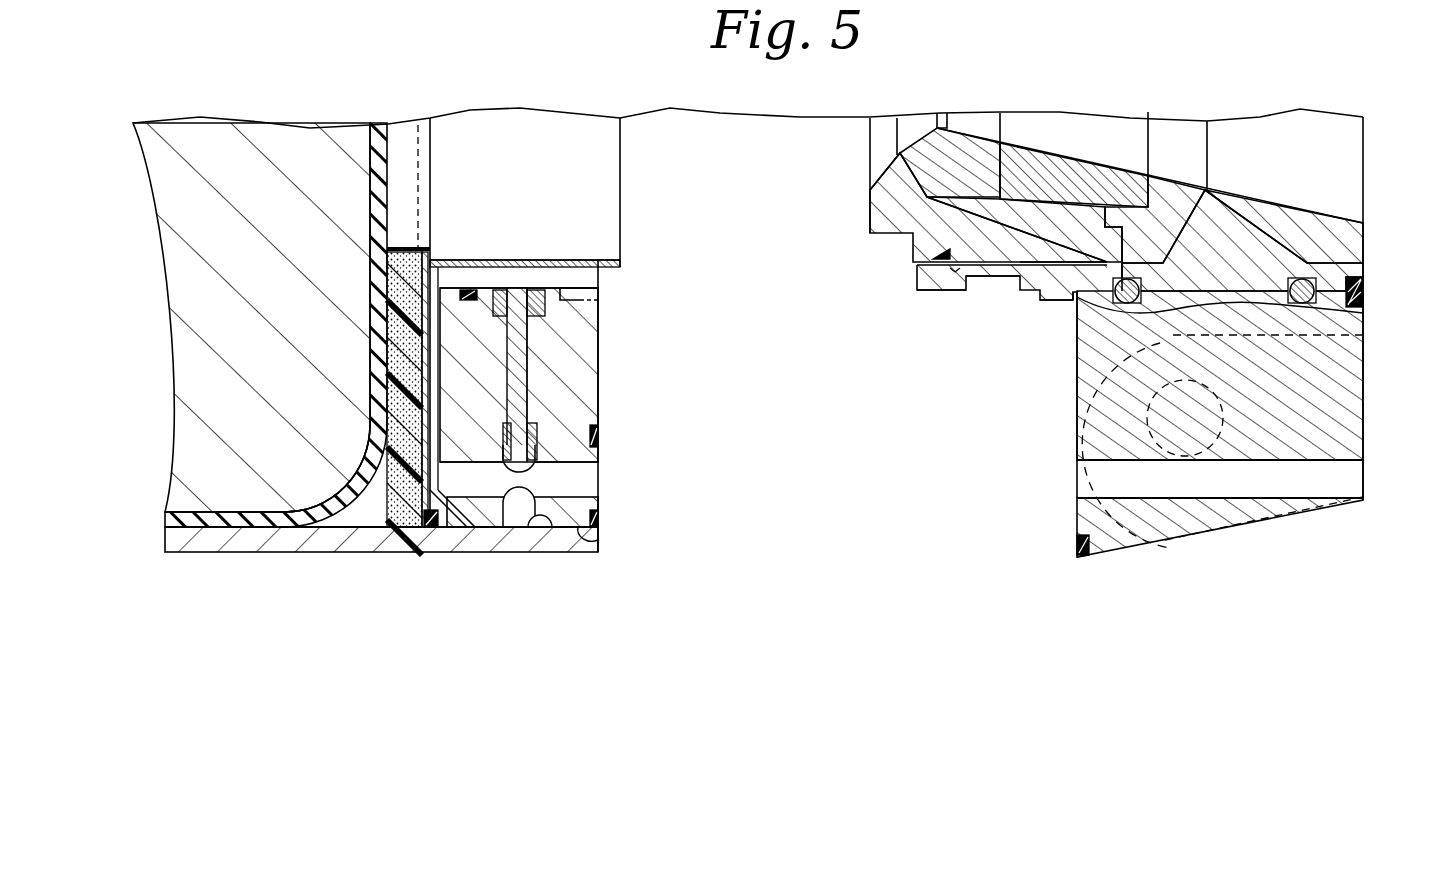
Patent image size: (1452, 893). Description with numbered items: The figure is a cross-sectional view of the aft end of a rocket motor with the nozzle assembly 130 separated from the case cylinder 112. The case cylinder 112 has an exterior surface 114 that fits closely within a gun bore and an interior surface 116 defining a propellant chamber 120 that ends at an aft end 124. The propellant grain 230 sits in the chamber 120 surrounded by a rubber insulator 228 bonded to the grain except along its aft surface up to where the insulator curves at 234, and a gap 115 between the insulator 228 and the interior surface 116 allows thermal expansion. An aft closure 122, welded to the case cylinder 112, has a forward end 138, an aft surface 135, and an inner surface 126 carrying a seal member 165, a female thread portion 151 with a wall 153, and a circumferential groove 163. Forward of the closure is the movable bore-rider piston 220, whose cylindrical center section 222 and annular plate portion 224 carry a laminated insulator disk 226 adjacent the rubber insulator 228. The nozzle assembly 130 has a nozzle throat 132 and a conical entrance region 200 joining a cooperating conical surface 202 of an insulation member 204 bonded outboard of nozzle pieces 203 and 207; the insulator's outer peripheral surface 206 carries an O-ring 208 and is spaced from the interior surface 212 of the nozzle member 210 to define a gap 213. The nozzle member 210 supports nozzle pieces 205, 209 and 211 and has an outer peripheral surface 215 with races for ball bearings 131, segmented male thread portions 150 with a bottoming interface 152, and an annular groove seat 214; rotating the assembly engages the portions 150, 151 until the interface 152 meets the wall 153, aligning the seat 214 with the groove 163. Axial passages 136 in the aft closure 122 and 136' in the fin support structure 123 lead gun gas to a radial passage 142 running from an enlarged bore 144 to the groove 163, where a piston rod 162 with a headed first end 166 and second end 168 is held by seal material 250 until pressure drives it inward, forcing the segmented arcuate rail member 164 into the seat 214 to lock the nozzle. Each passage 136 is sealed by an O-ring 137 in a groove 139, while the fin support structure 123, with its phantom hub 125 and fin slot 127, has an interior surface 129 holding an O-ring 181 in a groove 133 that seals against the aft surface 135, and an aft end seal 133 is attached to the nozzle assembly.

The case cylinder 112 is at (293, 540).
The exterior surface 114 is at (337, 553).
The gap 115 is at (372, 522).
The interior surface 116 is at (222, 516).
The propellant chamber 120 is at (210, 525).
The aft closure 122 is at (597, 545).
The fin support structure 123 is at (1068, 440).
The aft end 124 is at (531, 545).
The hub 125 is at (1230, 465).
The inner surface 126 is at (478, 289).
The slot 127 is at (1170, 548).
The interior surface 129 is at (1077, 398).
The nozzle assembly 130 is at (1368, 158).
The ball bearings 131 is at (1363, 313).
The nozzle throat 132 is at (950, 120).
The aft end seal 133 is at (1364, 288).
The aft surface 135 is at (598, 360).
The axial passage 136 is at (556, 505).
The axial passage 136' is at (1179, 477).
The O-ring 137 is at (600, 520).
The forward end 138 is at (578, 478).
The groove 139 is at (600, 540).
The radially extending passage 142 is at (525, 370).
The enlarged bore 144 is at (540, 428).
The male thread connection portion 150 is at (1062, 300).
The female thread connection portion 151 is at (602, 299).
The bottoming interface 152 is at (1033, 302).
The wall 153 is at (590, 290).
The piston rod 162 is at (527, 355).
The circumferential groove 163 is at (565, 288).
The segmented arcuate rail member 164 is at (498, 290).
The seal member 165 is at (462, 290).
The first headed end 166 is at (530, 465).
The second end 168 is at (535, 290).
The annular O-ring 181 is at (1080, 540).
The conical entrance region 200 is at (915, 143).
The cooperating conical surface 202 is at (887, 178).
The nozzle piece 203 is at (950, 162).
The insulation member 204 is at (988, 207).
The nozzle piece 205 is at (1074, 175).
The outer peripheral surface 206 is at (1050, 265).
The nozzle piece 207 is at (1024, 229).
The O-ring 208 is at (930, 253).
The nozzle piece 209 is at (1155, 219).
The nozzle member 210 is at (1242, 240).
The nozzle piece 211 is at (1284, 226).
The interior surface 212 is at (955, 268).
The gap 213 is at (905, 268).
The groove seat 214 is at (1000, 278).
The outer peripheral surface 215 is at (918, 292).
The movable piston 220 is at (628, 146).
The cylindrical center section 222 is at (525, 322).
The annular plate portion 224 is at (383, 358).
The annular insulator disk 226 is at (408, 273).
The rubber insulator 228 is at (370, 180).
The propellant grain 230 is at (251, 317).
The curve 234 is at (332, 492).
The seal material 250 is at (600, 436).